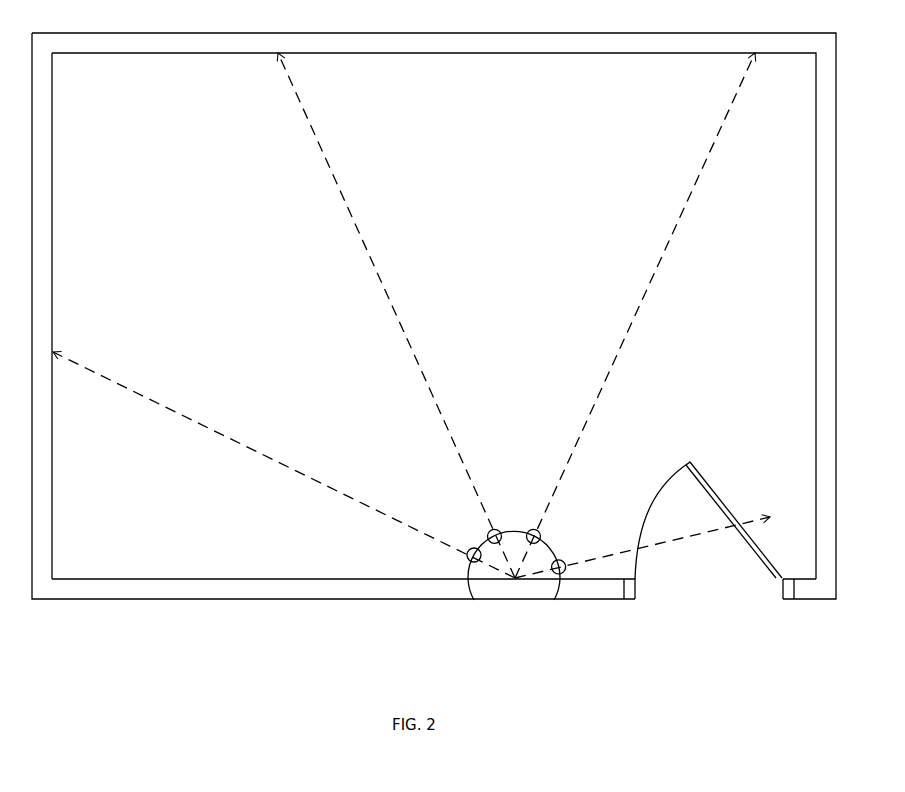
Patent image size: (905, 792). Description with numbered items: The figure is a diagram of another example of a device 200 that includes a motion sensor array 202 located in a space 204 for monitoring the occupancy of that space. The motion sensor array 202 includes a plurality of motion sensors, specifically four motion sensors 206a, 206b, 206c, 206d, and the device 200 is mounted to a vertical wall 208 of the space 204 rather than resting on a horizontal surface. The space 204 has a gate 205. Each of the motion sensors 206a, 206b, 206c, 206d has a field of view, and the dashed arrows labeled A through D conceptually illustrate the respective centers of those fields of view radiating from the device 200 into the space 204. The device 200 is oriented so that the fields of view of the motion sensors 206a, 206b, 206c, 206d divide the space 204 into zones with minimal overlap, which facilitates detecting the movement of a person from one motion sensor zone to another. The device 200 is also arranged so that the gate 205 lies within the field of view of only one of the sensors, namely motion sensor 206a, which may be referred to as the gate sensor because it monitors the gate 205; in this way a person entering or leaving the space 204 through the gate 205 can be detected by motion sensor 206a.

The device 200 is at (517, 600).
The motion sensor array 202 is at (500, 448).
The space 204 is at (528, 157).
The gate 205 is at (740, 602).
The motion sensor 206a is at (565, 568).
The motion sensor 206b is at (540, 540).
The motion sensor 206c is at (490, 535).
The motion sensor 206d is at (467, 560).
The vertical wall 208 is at (232, 579).